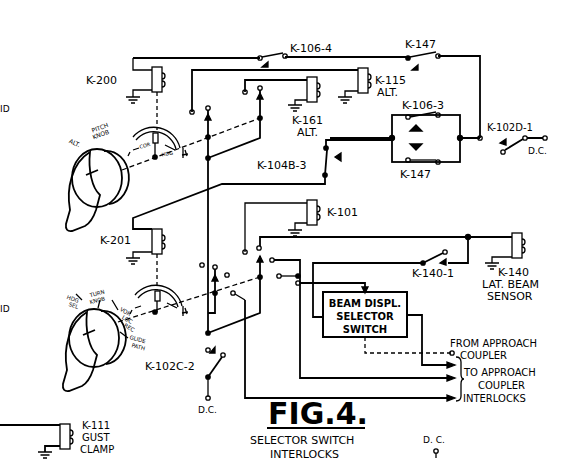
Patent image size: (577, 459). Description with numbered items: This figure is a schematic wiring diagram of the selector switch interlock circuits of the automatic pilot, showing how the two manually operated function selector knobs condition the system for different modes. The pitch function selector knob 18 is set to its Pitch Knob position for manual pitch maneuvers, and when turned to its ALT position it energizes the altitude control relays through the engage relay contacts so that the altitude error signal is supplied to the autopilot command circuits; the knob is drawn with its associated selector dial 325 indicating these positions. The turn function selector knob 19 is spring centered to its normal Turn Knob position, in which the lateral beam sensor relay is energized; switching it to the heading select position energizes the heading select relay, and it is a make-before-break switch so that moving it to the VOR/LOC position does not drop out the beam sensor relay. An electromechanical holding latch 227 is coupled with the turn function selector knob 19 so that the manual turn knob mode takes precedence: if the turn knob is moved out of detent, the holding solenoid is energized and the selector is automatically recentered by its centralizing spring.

The pitch function selector knob 18 is at (71, 190).
The turn function selector knob 19 is at (67, 345).
The selector switch dial 325 is at (137, 127).
The electromechanical holding latch 227 is at (163, 290).